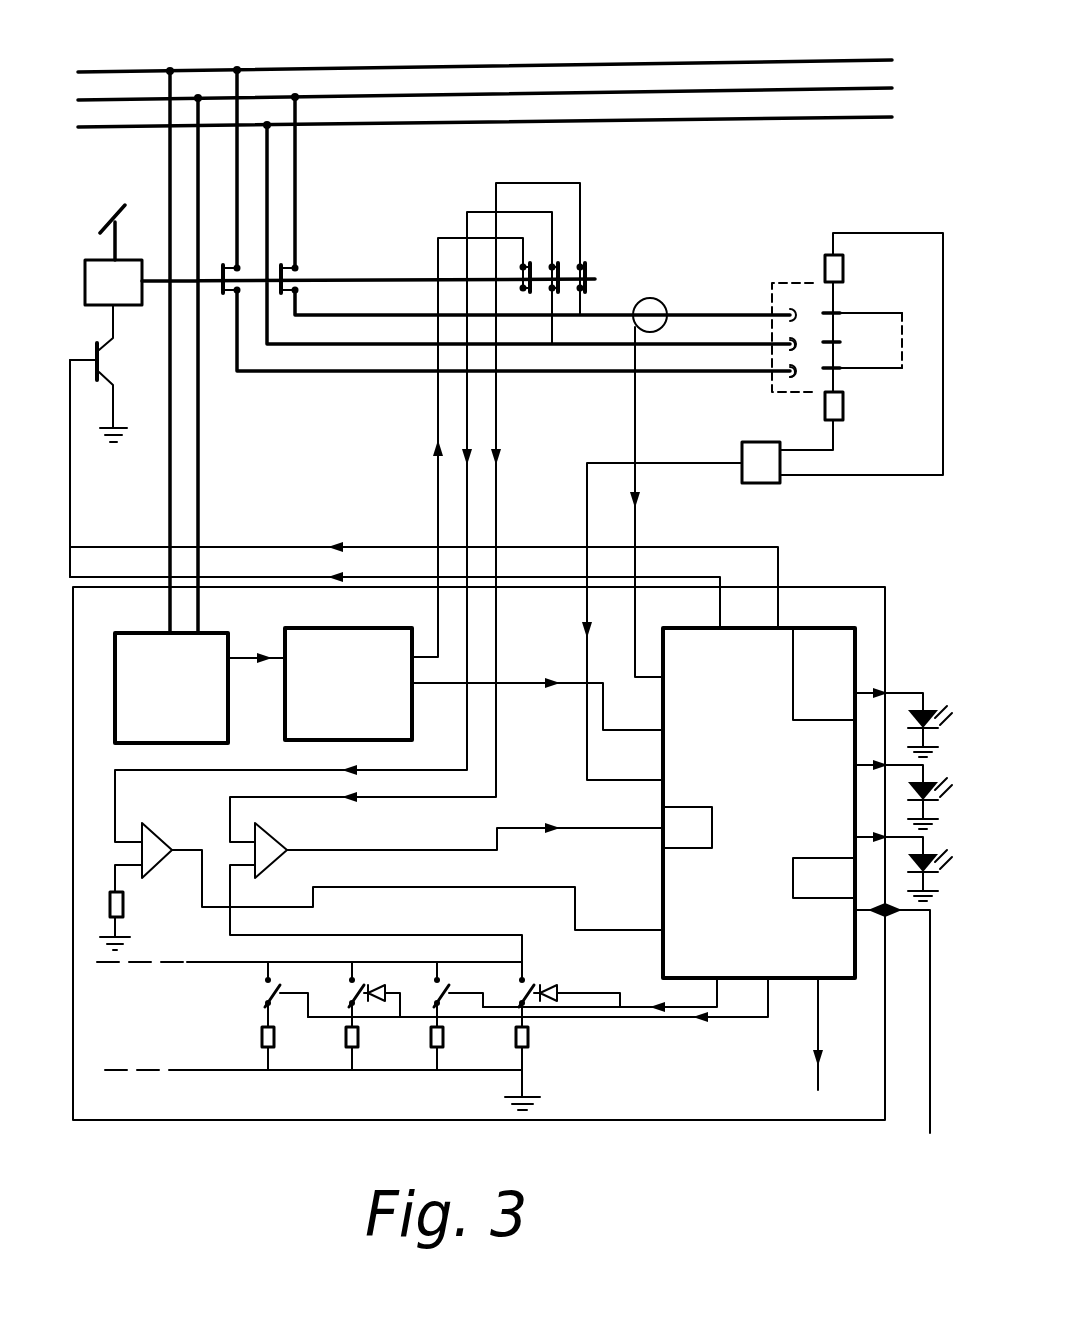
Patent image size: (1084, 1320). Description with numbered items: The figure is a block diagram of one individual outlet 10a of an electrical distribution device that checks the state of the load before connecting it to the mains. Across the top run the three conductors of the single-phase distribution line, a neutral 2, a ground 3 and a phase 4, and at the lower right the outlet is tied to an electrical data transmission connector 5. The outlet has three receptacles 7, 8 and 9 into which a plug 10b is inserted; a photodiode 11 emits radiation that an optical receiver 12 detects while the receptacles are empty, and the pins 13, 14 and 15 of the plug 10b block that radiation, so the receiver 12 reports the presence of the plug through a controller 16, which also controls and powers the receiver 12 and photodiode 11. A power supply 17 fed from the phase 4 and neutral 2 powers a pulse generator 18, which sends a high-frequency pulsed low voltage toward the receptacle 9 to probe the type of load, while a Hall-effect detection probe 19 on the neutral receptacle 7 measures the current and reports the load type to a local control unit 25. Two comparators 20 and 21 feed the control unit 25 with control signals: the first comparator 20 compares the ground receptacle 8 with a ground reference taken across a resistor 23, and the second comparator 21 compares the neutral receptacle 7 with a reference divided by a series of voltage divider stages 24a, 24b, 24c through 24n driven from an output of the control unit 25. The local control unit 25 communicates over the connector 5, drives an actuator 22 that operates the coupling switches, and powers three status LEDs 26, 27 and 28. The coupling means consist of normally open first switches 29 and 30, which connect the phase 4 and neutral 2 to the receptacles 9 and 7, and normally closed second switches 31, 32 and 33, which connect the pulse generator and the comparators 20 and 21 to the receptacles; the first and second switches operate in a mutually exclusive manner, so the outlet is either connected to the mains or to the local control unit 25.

The neutral 2 is at (440, 92).
The ground 3 is at (430, 125).
The phase 4 is at (515, 62).
The electrical data transmission connector 5 is at (930, 980).
The receptacle 7 is at (796, 306).
The receptacle 8 is at (792, 347).
The receptacle 9 is at (796, 376).
The outlet 10a is at (768, 279).
The plug 10b is at (918, 343).
The photodiode 11 is at (845, 270).
The optical receiver 12 is at (845, 412).
The pin 13 is at (836, 310).
The pin 14 is at (838, 340).
The pin 15 is at (832, 370).
The controller 16 is at (768, 472).
The power supply 17 is at (178, 716).
The pulse generator 18 is at (350, 716).
The Hall-effect detection probe 19 is at (665, 306).
The first comparator 20 is at (158, 825).
The second comparator 21 is at (275, 845).
The actuator 22 is at (128, 298).
The resistor 23 is at (125, 905).
The voltage divider stage 24a is at (530, 1037).
The voltage divider stage 24b is at (447, 1035).
The voltage divider stage 24c is at (362, 1035).
The voltage divider stage 24n is at (278, 1035).
The local control unit 25 is at (797, 960).
The LED 26 is at (915, 717).
The LED 27 is at (915, 795).
The LED 28 is at (915, 862).
The first switch 29 is at (224, 272).
The first switch 30 is at (276, 268).
The second switch 31 is at (533, 262).
The second switch 32 is at (560, 262).
The second switch 33 is at (592, 278).